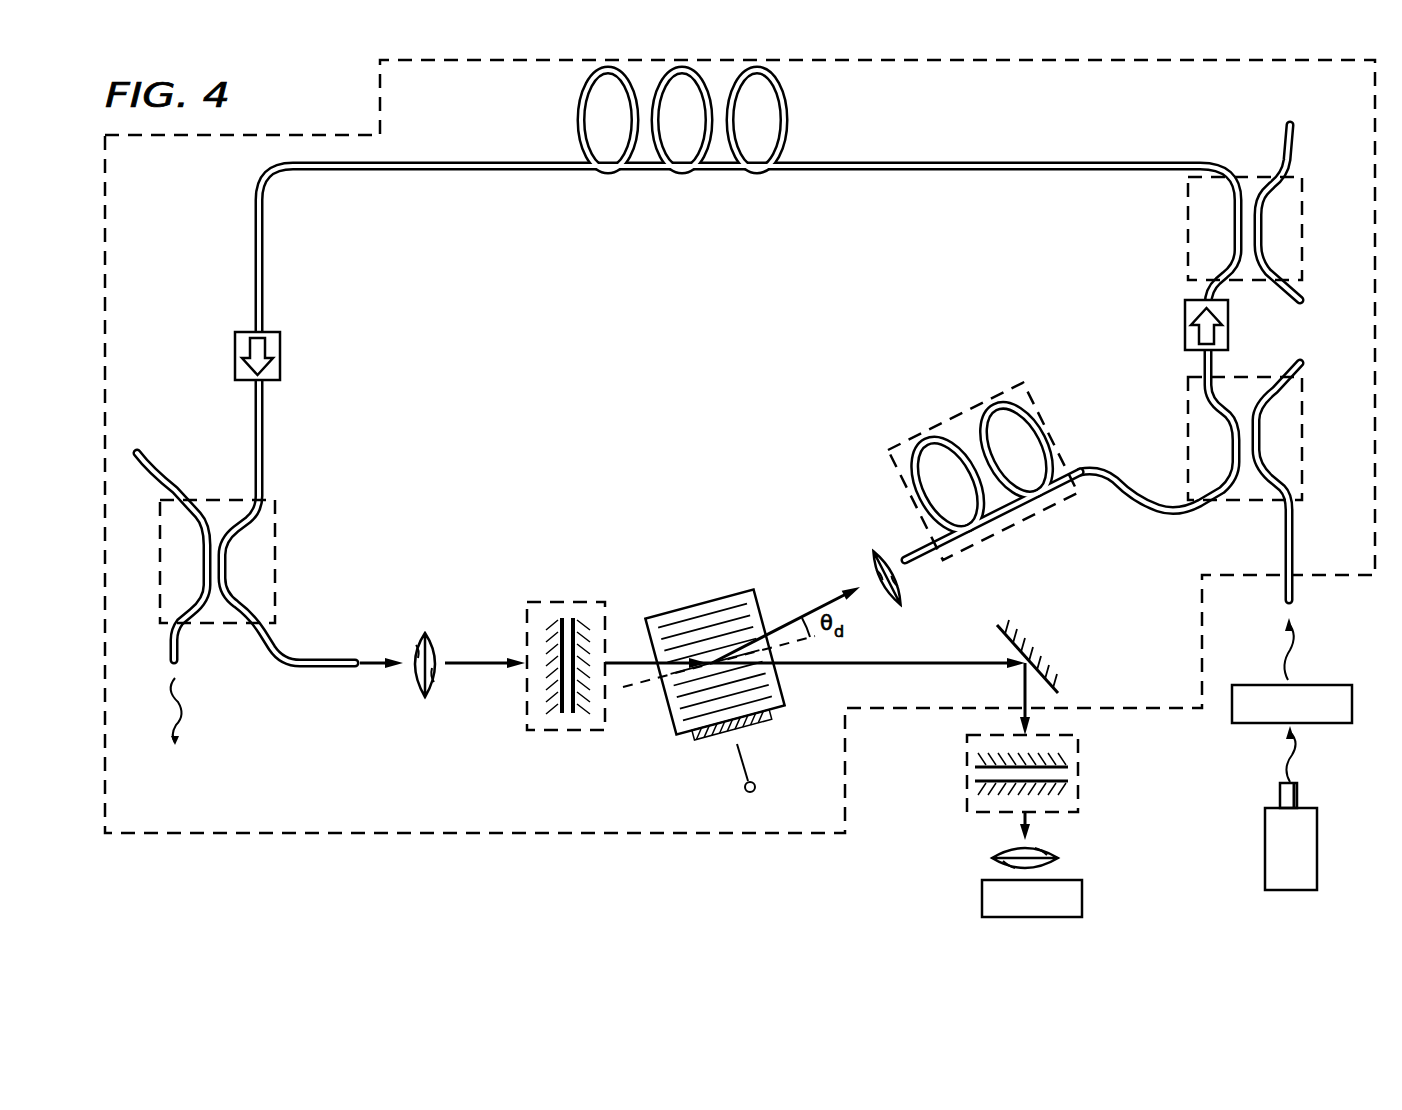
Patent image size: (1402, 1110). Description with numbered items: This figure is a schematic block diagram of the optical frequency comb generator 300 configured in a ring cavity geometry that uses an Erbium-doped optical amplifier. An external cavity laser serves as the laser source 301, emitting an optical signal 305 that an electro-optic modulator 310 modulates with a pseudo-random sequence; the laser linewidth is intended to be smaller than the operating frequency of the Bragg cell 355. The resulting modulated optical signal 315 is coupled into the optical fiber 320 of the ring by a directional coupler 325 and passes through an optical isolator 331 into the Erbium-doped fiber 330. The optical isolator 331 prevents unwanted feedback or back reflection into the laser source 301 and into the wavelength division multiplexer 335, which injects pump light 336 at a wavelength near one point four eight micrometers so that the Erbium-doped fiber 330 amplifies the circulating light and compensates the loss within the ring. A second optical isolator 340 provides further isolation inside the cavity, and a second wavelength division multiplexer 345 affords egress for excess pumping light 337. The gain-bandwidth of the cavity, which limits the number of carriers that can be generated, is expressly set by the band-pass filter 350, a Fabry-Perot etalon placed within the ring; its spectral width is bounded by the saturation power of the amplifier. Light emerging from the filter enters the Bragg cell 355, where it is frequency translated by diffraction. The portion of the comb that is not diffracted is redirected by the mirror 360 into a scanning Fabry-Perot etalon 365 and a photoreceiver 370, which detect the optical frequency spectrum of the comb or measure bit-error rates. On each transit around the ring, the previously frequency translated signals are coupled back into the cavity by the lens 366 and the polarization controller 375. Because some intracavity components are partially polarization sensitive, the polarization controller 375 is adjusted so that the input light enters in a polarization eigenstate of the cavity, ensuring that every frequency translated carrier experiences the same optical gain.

The fiber optic ring laser system 300 is at (380, 83).
The laser source 301 is at (1265, 832).
The optical signal 305 is at (1300, 762).
The electro-optic modulator 310 is at (1245, 724).
The modulated optical signal 315 is at (1300, 641).
The optical fiber 320 is at (1200, 366).
The directional coupler 325 is at (1302, 398).
The Erbium-doped fiber 330 is at (885, 160).
The optical isolator 331 is at (1185, 328).
The wavelength division multiplexer 335 is at (1188, 232).
The pump light 336 is at (1355, 345).
The excess pumping light 337 is at (180, 700).
The optical isolator 340 is at (281, 334).
The wavelength division multiplexer 345 is at (275, 535).
The band-pass filter 350 is at (528, 600).
The Bragg cell 355 is at (700, 600).
The mirror 360 is at (1055, 661).
The scanning Fabry-Perot etalon 365 is at (967, 767).
The lens 366 is at (872, 552).
The photoreceiver 370 is at (982, 882).
The polarization controller 375 is at (925, 425).